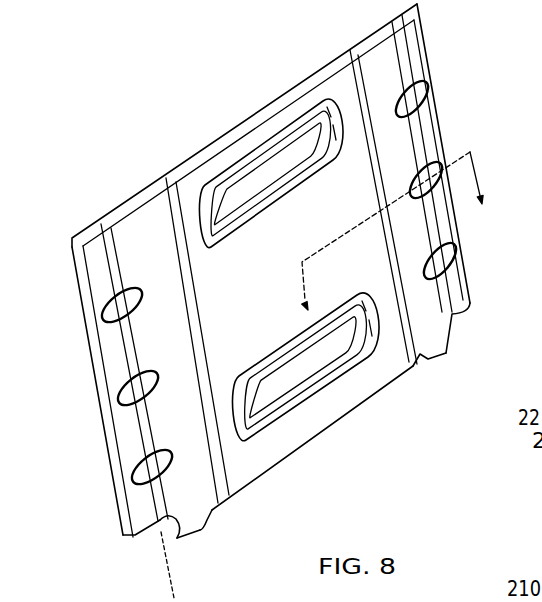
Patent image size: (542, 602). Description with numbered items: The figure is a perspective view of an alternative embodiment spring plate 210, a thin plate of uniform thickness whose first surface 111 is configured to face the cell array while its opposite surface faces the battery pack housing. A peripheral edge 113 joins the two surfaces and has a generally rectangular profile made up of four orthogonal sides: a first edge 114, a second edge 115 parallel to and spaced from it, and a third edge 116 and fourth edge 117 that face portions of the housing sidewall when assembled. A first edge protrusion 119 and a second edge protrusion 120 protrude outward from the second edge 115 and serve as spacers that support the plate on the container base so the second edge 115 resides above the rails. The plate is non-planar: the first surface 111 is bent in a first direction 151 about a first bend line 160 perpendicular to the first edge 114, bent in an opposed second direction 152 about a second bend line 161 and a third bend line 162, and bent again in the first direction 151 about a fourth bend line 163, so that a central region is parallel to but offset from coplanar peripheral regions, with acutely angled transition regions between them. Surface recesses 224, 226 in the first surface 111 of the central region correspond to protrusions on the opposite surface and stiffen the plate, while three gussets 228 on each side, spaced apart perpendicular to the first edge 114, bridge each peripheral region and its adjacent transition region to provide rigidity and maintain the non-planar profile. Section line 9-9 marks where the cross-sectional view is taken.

The spring plate 210 is at (182, 58).
The first surface 111 is at (328, 64).
The peripheral edge 113 is at (112, 473).
The first edge 114 is at (217, 137).
The second edge 115 is at (320, 430).
The third edge 116 is at (76, 268).
The fourth edge 117 is at (440, 128).
The first edge protrusion 119 is at (200, 533).
The second edge protrusion 120 is at (450, 360).
The first direction 151 is at (106, 222).
The second direction 152 is at (168, 177).
The first bend line 160 is at (167, 577).
The second bend line 161 is at (233, 495).
The third bend line 162 is at (420, 400).
The fourth bend line 163 is at (449, 355).
The surface recess 224 is at (256, 212).
The surface recess 226 is at (283, 400).
The gussets 228 is at (128, 376).
The section line 9- 9 is at (403, 233).